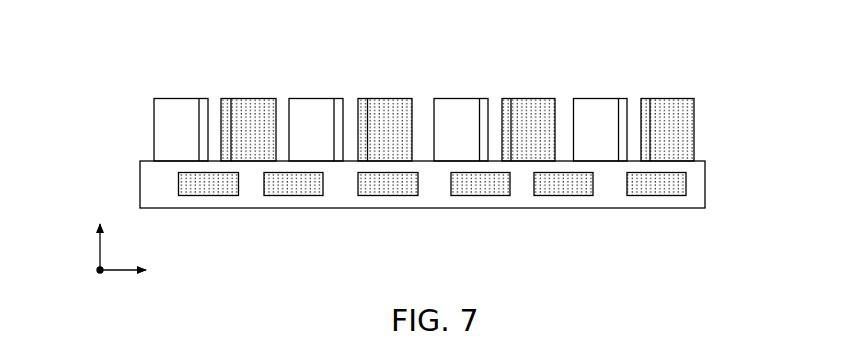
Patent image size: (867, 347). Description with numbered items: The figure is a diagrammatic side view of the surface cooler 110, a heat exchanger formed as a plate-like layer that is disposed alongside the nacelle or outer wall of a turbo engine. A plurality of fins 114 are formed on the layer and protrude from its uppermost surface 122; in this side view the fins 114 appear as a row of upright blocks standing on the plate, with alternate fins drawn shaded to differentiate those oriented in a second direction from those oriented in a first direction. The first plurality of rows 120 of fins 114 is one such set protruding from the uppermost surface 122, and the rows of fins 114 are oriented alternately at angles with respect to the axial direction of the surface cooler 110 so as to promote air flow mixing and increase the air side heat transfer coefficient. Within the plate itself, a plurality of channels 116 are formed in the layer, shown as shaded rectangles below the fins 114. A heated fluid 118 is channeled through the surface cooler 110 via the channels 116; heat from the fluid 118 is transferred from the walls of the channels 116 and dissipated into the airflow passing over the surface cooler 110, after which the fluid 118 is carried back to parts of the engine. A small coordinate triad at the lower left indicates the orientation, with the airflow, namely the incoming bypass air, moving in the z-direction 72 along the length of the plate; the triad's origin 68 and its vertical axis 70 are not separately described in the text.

The surface cooler 110 is at (680, 57).
The fins 114 is at (450, 106).
The channels 116 is at (574, 193).
The heated fluid 118 is at (480, 193).
The first plurality of rows 120 is at (178, 106).
The uppermost surface 122 is at (701, 161).
The origin 68 is at (96, 271).
The Y axis 70 is at (100, 248).
The z-direction 72 is at (128, 273).